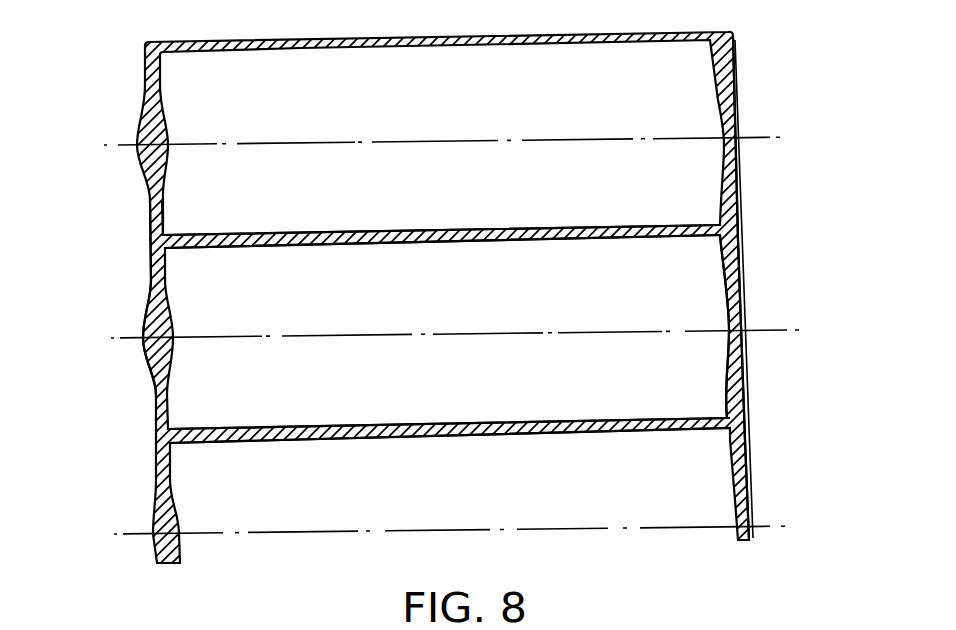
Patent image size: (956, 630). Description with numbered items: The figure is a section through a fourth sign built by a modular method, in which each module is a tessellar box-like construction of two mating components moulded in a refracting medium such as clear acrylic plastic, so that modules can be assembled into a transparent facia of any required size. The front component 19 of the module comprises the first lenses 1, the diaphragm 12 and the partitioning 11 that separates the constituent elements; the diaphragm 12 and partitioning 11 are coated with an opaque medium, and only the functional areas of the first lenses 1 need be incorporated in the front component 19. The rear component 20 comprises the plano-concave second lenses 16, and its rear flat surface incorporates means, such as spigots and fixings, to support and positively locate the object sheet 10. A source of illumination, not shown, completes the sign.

The first lenses 1 is at (147, 355).
The object sheet 10 is at (748, 458).
The partitioning 11 is at (443, 436).
The diaphragm 12 is at (150, 228).
The second lenses 16 is at (738, 243).
The front component 19 is at (128, 317).
The rear component 20 is at (720, 318).